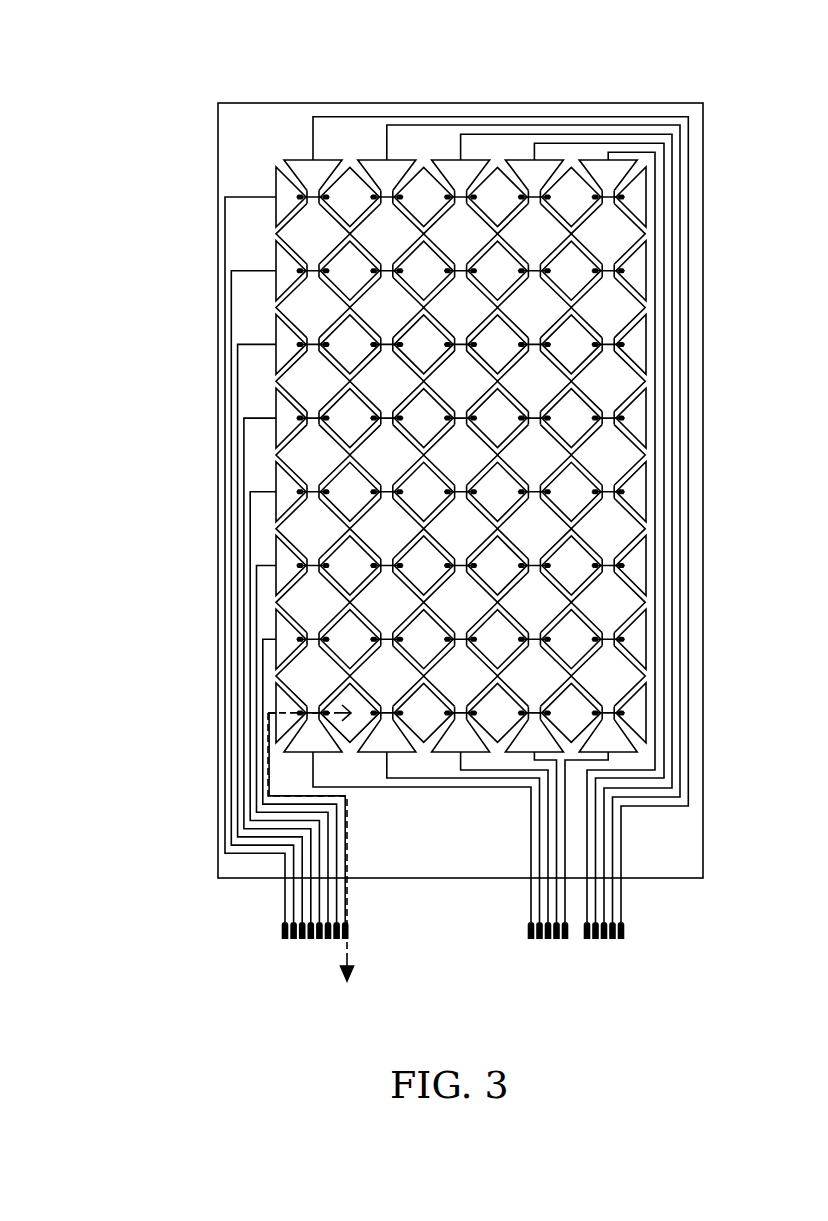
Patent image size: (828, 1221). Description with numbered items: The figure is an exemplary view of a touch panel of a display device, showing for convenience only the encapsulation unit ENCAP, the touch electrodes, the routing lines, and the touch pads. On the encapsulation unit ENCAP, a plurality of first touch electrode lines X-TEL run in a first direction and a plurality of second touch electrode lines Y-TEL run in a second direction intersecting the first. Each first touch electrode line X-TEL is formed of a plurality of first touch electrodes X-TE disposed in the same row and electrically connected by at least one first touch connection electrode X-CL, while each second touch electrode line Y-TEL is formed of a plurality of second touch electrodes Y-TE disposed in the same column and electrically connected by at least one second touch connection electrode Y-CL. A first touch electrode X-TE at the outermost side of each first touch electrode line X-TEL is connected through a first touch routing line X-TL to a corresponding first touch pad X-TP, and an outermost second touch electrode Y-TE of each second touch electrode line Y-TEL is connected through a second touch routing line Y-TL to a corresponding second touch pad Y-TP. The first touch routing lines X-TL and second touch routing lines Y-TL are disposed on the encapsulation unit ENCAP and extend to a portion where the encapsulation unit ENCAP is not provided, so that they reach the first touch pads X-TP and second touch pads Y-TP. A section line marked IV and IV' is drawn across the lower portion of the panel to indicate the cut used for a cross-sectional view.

The second touch electrode line Y-TEL is at (451, 378).
The second touch connection electrode Y-CL is at (310, 194).
The second touch electrode Y-TE is at (323, 227).
The second touch routing line Y-TL is at (460, 116).
The first touch electrode line X-TEL is at (342, 455).
The first touch connection electrode X-CL is at (306, 268).
The first touch electrode X-TE is at (292, 313).
The first touch routing line X-TL is at (224, 384).
The encapsulation unit ENCAP is at (218, 850).
The first touch pad X-TP is at (292, 941).
The second touch pad Y-TP is at (621, 939).
The section line IV-IV' IV is at (319, 834).
The section line IV- IV' is at (352, 983).